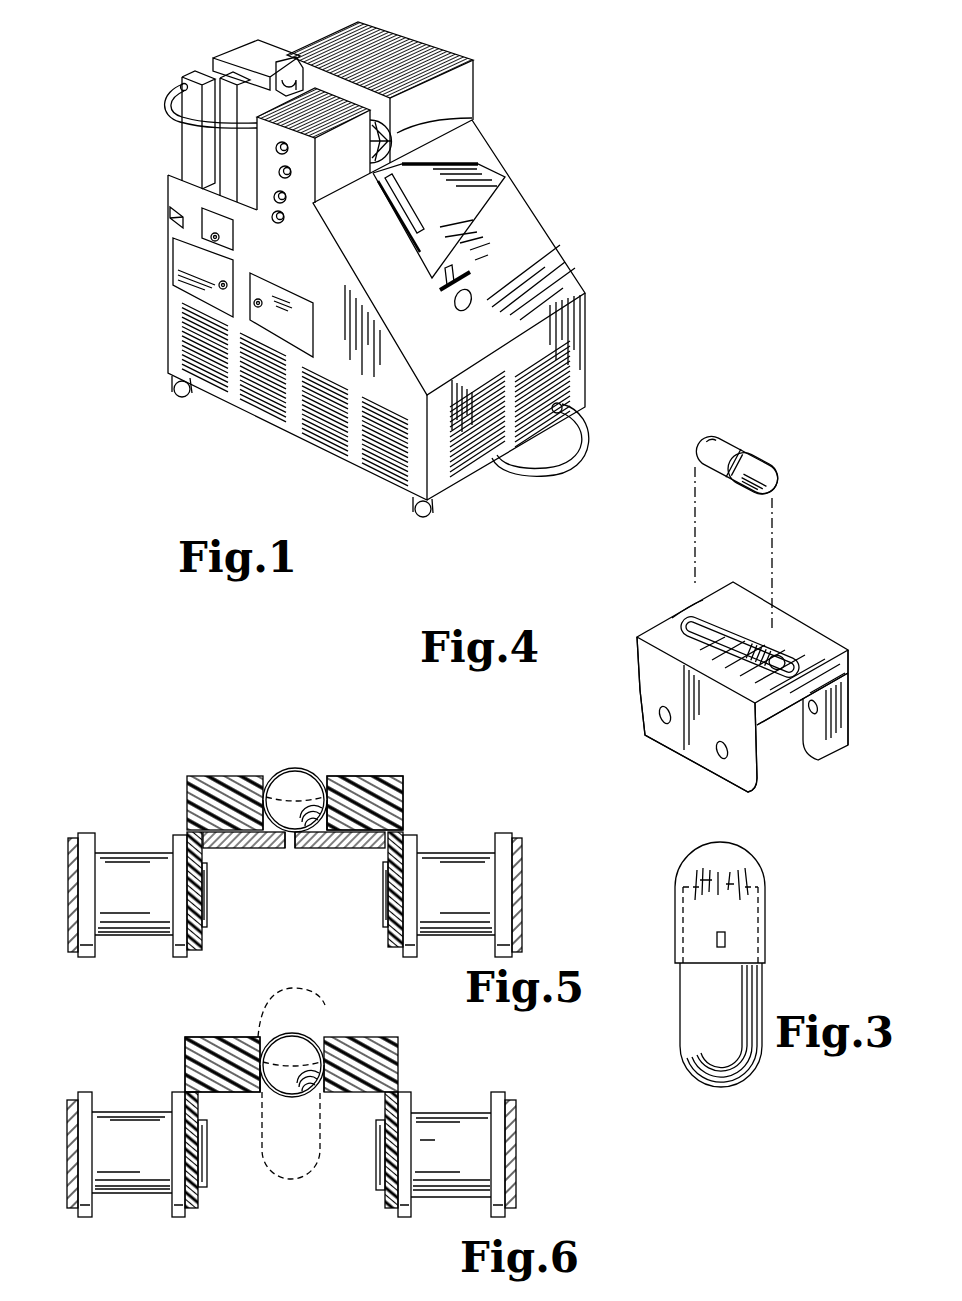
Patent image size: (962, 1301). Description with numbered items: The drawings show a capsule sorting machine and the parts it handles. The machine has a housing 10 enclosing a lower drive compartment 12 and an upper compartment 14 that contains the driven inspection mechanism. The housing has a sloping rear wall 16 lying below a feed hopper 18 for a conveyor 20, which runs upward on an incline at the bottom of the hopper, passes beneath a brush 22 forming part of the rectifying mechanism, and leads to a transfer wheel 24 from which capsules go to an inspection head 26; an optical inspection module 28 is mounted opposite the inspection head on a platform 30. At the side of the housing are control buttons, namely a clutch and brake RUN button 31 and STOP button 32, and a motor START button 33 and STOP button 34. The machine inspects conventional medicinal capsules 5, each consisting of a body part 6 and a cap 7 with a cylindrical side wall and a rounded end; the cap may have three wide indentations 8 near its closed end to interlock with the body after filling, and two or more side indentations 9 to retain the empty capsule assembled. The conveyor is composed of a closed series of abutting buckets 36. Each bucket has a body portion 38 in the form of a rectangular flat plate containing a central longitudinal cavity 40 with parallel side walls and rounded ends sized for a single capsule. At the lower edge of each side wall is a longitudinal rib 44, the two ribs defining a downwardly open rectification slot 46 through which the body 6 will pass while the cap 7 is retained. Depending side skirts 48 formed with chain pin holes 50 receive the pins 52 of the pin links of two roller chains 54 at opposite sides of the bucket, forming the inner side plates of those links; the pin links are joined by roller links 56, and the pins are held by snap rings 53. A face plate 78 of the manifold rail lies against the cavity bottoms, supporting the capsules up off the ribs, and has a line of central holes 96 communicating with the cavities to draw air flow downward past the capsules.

In FIG. 4, the medicinal capsule 5 is at (750, 442).
In FIG. 5, the medicinal capsule 5 is at (297, 768).
In FIG. 6, the medicinal capsule 5 is at (296, 1031).
In FIG. 3, the medicinal capsule 5 is at (771, 952).
In FIG. 4, the body part 6 is at (718, 432).
In FIG. 5, the body part 6 is at (303, 780).
In FIG. 6, the body part 6 is at (285, 1045).
In FIG. 3, the body part 6 is at (698, 1028).
In FIG. 4, the cap 7 is at (780, 478).
In FIG. 5, the cap 7 is at (278, 770).
In FIG. 6, the cap 7 is at (322, 1025).
In FIG. 3, the cap 7 is at (768, 882).
In FIG. 3, the wide indentations 8 is at (700, 880).
In FIG. 3, the side indentations 9 is at (717, 940).
In FIG. 1, the housing 10 is at (545, 240).
In FIG. 1, the lower drive compartment 12 is at (597, 360).
In FIG. 1, the upper compartment 14 is at (531, 194).
In FIG. 1, the sloping rear wall 16 is at (544, 306).
In FIG. 1, the feed hopper 18 is at (467, 197).
In FIG. 1, the conveyor 20 is at (390, 192).
In FIG. 1, the brush 22 is at (389, 138).
In FIG. 1, the transfer wheel 24 is at (338, 86).
In FIG. 1, the inspection head 26 is at (297, 83).
In FIG. 1, the optical inspection module 28 is at (212, 56).
In FIG. 1, the platform 30 is at (232, 188).
In FIG. 1, the clutch and brake RUN button 31 is at (287, 151).
In FIG. 1, the clutch and brake STOP button 32 is at (283, 177).
In FIG. 1, the motor START button 33 is at (286, 198).
In FIG. 1, the motor STOP button 34 is at (277, 224).
In FIG. 4, the bucket 36 is at (798, 620).
In FIG. 5, the bucket 36 is at (406, 790).
In FIG. 6, the bucket 36 is at (404, 1052).
In FIG. 4, the body portion 38 is at (782, 710).
In FIG. 5, the body portion 38 is at (372, 806).
In FIG. 6, the body portion 38 is at (195, 1058).
In FIG. 4, the central longitudinal cavity 40 is at (727, 622).
In FIG. 4, the longitudinal rib 44 is at (778, 645).
In FIG. 5, the longitudinal rib 44 is at (279, 827).
In FIG. 6, the longitudinal rib 44 is at (279, 1092).
In FIG. 4, the rectification slot 46 is at (700, 632).
In FIG. 4, the side skirts 48 is at (845, 700).
In FIG. 5, the side skirts 48 is at (197, 950).
In FIG. 6, the side skirts 48 is at (291, 1150).
In FIG. 4, the chain pin holes 50 is at (660, 718).
In FIG. 5, the pins 52 is at (380, 902).
In FIG. 6, the pins 52 is at (373, 1160).
In FIG. 5, the snap rings 53 is at (208, 922).
In FIG. 6, the snap rings 53 is at (386, 1121).
In FIG. 5, the roller chains 54 is at (136, 844).
In FIG. 6, the roller chains 54 is at (140, 1104).
In FIG. 5, the roller links 56 is at (137, 920).
In FIG. 6, the roller links 56 is at (140, 1190).
In FIG. 5, the face plate 78 is at (243, 848).
In FIG. 5, the central holes 96 is at (297, 848).